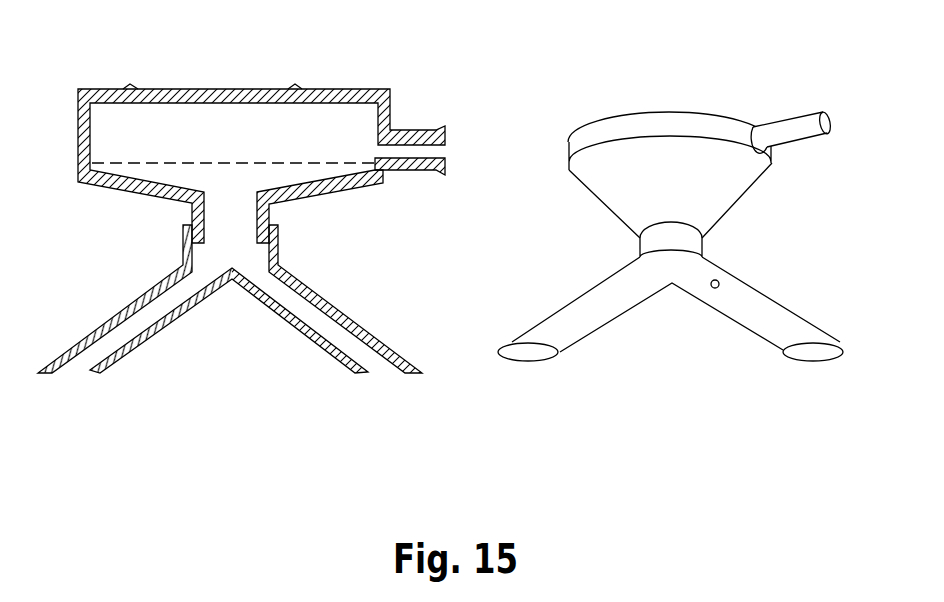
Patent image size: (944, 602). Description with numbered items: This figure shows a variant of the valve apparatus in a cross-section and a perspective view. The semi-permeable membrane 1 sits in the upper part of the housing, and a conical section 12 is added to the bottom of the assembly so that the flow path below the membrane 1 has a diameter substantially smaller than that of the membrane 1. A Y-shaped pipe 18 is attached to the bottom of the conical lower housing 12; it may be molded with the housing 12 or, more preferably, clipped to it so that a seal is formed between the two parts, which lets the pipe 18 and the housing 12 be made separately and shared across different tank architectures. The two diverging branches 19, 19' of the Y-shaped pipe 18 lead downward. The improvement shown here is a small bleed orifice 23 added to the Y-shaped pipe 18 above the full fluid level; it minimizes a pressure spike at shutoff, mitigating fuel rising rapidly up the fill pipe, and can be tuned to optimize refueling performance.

The membrane 1 is at (310, 162).
The conical section 12 is at (607, 212).
The Y-shaped pipe 18 is at (142, 353).
The outlet tube 19 is at (115, 345).
The second outlet tube 19' is at (345, 356).
The bleed orifice 23 is at (718, 280).